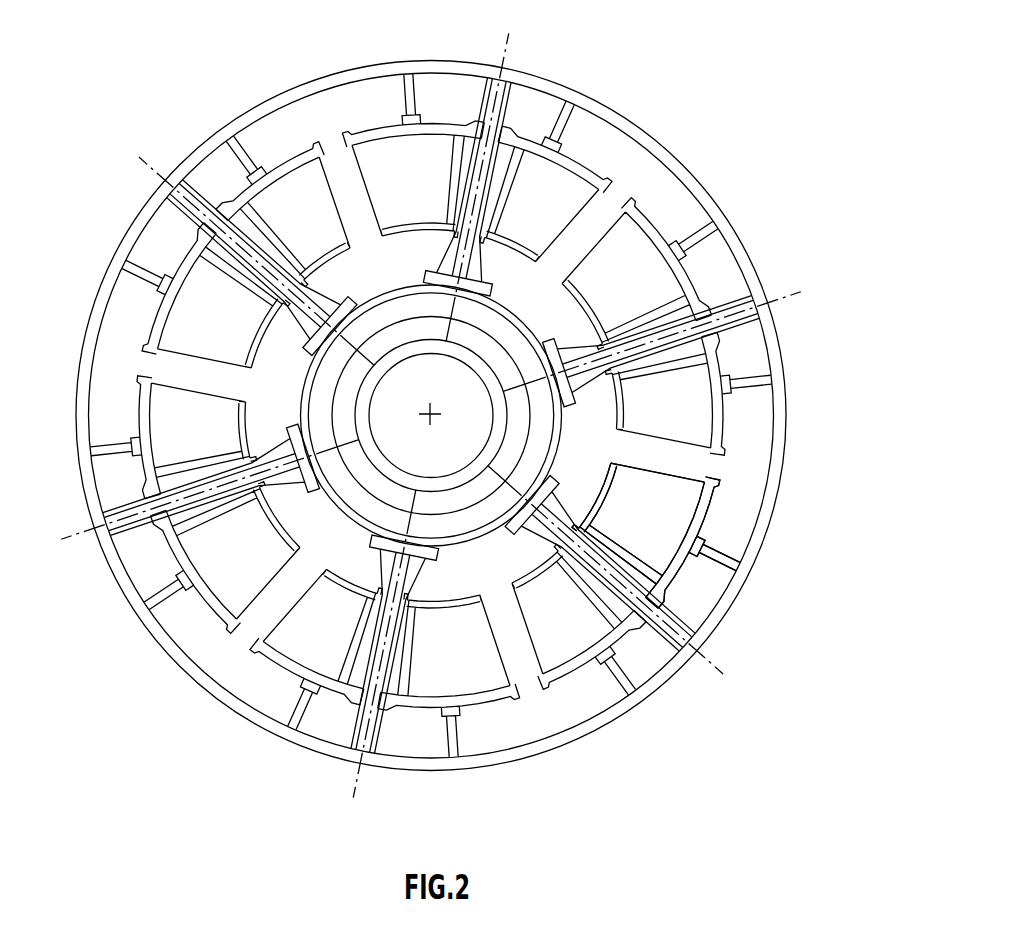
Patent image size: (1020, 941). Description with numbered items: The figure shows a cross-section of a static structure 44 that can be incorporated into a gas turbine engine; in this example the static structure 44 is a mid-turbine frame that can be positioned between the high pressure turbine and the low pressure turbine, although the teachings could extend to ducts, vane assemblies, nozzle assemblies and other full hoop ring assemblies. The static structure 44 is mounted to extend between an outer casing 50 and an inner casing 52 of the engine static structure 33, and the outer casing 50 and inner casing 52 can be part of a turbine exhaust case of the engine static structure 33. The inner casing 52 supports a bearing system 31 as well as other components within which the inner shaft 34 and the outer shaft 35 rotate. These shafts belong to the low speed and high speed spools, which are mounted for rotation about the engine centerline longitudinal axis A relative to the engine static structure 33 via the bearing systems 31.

The engine static structure 33 is at (431, 415).
The outer casing 50 is at (777, 505).
The static structure 44 is at (712, 522).
The inner casing 52 is at (478, 548).
The bearing system 31 is at (373, 318).
The outer shaft 35 is at (518, 422).
The inner shaft 34 is at (495, 438).
The engine centerline longitudinal axis A is at (431, 414).